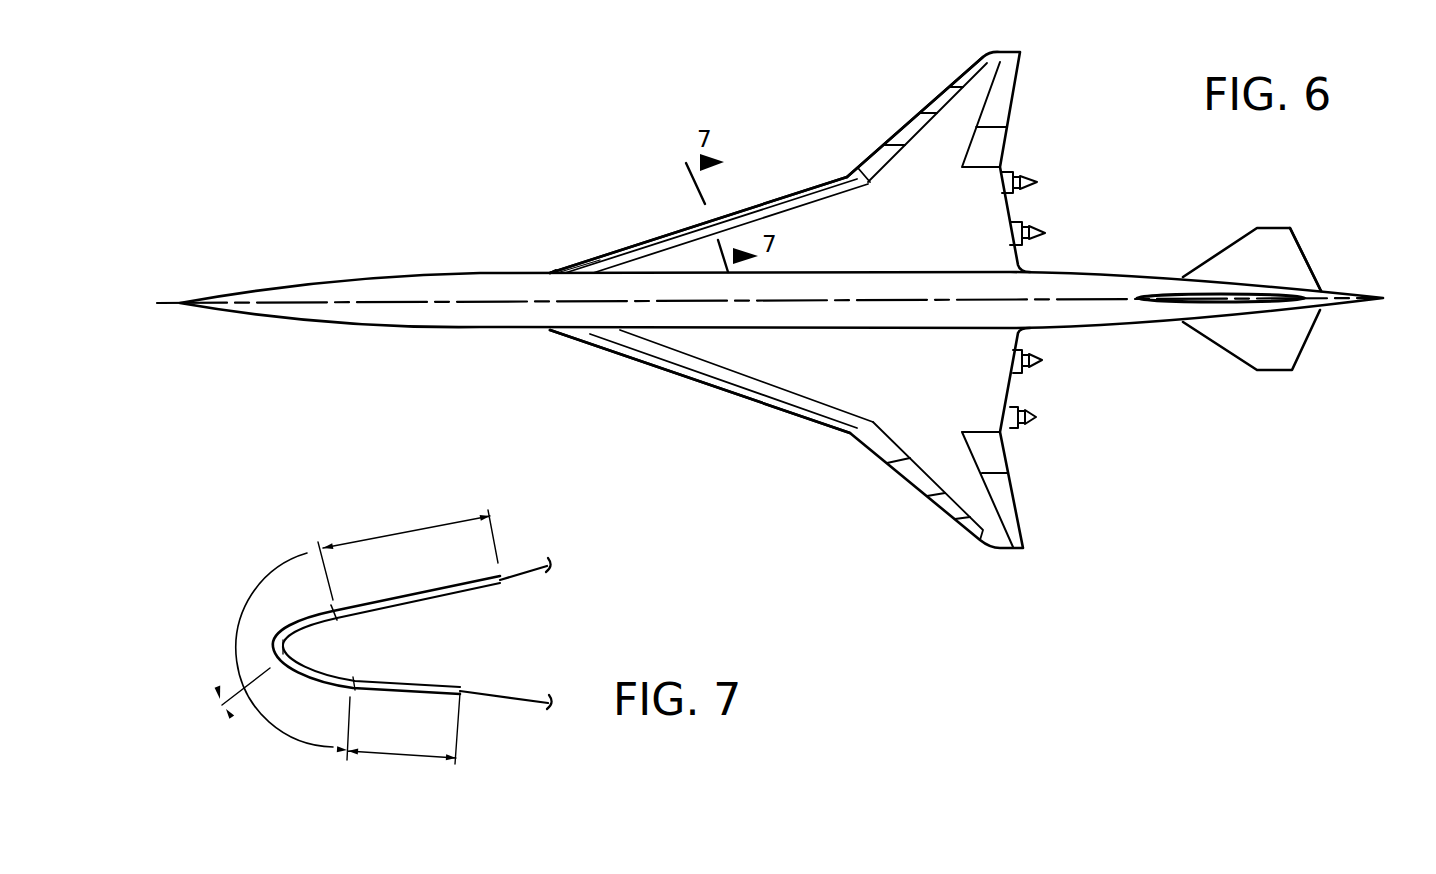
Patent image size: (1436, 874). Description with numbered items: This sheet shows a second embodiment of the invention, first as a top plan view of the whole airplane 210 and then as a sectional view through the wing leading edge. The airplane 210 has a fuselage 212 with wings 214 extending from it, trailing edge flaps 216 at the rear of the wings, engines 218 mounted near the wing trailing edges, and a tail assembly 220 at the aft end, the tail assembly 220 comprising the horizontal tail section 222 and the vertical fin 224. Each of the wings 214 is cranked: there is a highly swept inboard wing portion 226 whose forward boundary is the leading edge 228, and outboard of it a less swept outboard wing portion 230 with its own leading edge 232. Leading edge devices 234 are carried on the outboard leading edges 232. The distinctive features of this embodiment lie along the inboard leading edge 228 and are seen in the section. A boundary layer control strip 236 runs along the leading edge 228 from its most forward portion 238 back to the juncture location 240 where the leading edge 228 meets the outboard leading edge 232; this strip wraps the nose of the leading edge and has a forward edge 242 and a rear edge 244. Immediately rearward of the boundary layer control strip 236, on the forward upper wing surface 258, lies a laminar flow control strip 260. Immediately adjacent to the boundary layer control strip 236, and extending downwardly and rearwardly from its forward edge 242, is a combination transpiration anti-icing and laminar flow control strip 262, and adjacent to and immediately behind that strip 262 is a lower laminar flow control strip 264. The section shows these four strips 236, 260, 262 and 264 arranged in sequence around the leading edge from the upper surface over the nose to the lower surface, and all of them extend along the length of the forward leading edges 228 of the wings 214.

In FIG. 6, the airplane 210 is at (364, 228).
In FIG. 6, the fuselage 212 is at (482, 275).
In FIG. 6, the wings 214 is at (945, 137).
In FIG. 6, the trailing edge flaps 216 is at (993, 143).
In FIG. 6, the engines 218 is at (1027, 233).
In FIG. 6, the tail assembly 220 is at (1306, 220).
In FIG. 6, the horizontal tail section 222 is at (1283, 258).
In FIG. 6, the vertical fin 224 is at (1268, 297).
In FIG. 6, the inboard wing portion 226 is at (790, 235).
In FIG. 6, the leading edge 228 is at (612, 257).
In FIG. 6, the outboard wing portion 230 is at (917, 193).
In FIG. 6, the outboard leading edge 232 is at (887, 137).
In FIG. 6, the leading edge devices 234 is at (920, 108).
In FIG. 6, the boundary layer control strip 236 is at (801, 195).
In FIG. 7, the boundary layer control strip 236 is at (280, 628).
In FIG. 6, the most forward portion 238 is at (548, 270).
In FIG. 6, the juncture location 240 is at (847, 172).
In FIG. 7, the forward edge 242 is at (276, 658).
In FIG. 7, the rear edge 244 is at (305, 552).
In FIG. 7, the forward upper wing surface 258 is at (532, 560).
In FIG. 7, the laminar flow control strip 260 is at (415, 587).
In FIG. 7, the combination transpiration anti-icing and laminar flow control strip 262 is at (297, 682).
In FIG. 7, the lower laminar flow control strip 264 is at (398, 693).